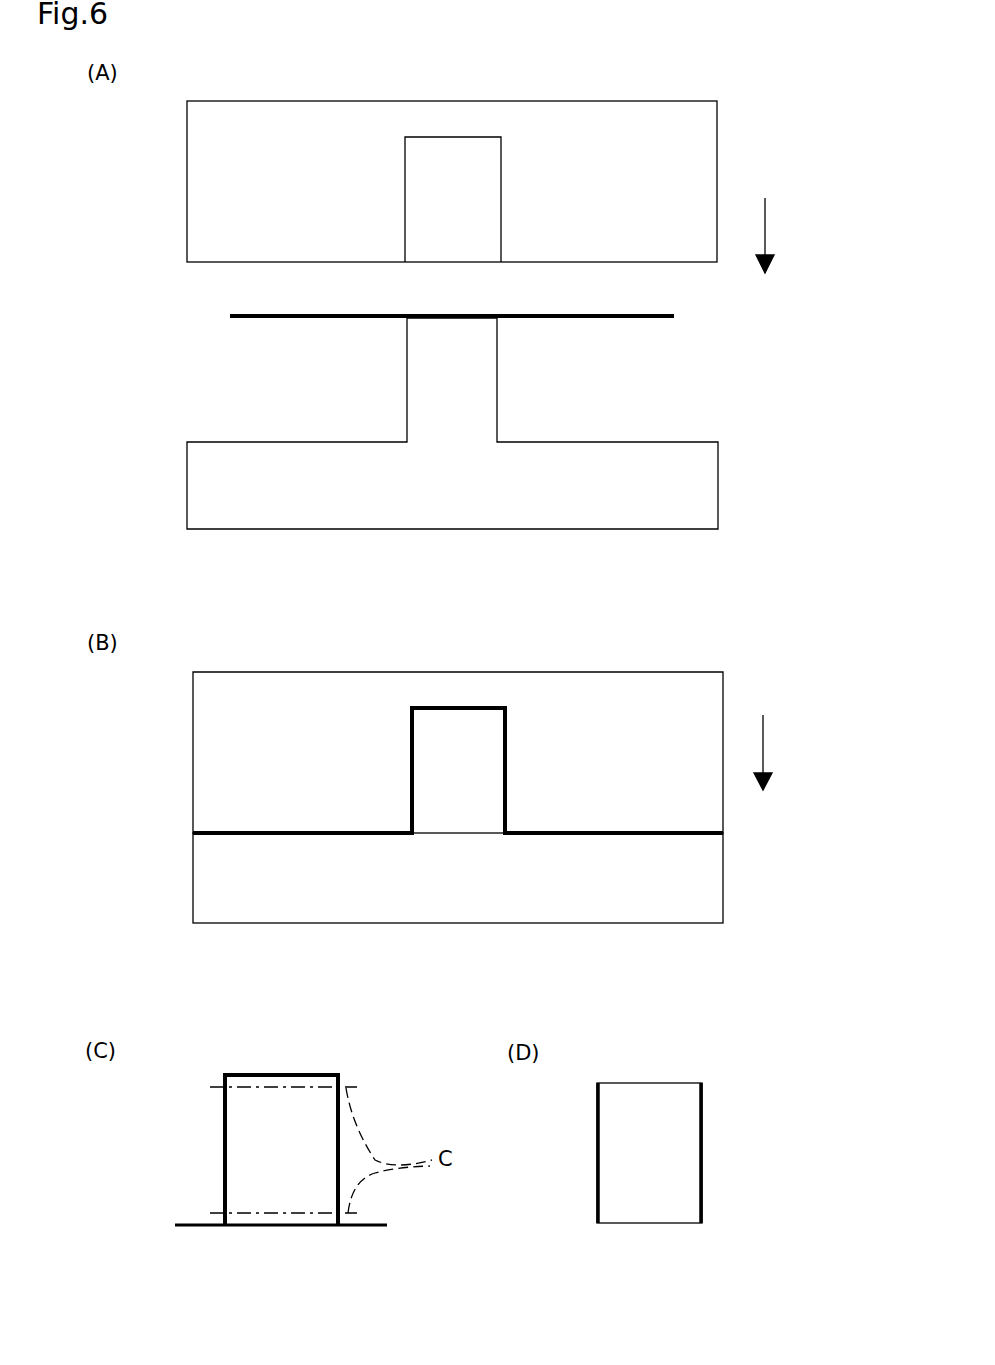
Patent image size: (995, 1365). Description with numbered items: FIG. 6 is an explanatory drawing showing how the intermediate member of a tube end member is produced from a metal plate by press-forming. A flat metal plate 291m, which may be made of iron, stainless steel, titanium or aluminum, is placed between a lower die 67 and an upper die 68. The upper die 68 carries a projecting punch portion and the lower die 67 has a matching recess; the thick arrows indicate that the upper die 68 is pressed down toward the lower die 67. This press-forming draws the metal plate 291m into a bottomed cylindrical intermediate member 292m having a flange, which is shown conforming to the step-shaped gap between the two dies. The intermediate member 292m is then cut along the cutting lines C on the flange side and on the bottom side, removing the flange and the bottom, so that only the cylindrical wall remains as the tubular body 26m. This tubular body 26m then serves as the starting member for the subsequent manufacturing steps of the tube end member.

The upper die 68 is at (205, 179).
The lower die 67 is at (200, 486).
The metal plate 291m is at (607, 318).
The intermediate member 292m is at (510, 772).
The tubular body 26m is at (703, 1143).